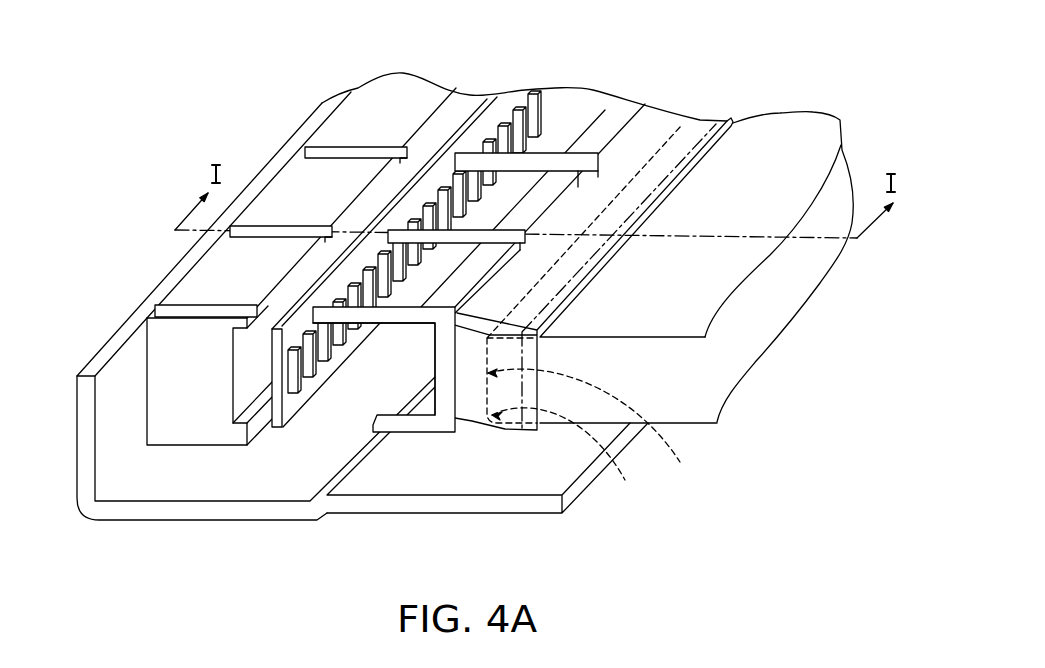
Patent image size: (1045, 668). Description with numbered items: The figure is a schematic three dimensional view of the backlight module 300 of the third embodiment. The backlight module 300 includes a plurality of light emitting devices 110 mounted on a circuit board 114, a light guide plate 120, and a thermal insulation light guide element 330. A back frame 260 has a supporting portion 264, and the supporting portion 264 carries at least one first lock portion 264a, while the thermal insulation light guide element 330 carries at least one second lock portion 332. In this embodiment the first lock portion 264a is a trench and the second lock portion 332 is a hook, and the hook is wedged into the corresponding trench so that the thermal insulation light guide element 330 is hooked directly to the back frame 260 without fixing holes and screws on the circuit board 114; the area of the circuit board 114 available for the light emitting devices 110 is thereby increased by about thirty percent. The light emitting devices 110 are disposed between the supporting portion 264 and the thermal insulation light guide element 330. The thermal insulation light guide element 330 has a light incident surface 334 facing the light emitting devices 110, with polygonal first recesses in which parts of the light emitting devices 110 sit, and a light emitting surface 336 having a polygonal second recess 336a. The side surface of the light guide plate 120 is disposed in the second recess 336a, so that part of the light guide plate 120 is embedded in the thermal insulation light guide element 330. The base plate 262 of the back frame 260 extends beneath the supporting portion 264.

The light emitting device 110 is at (293, 395).
The circuit board 114 is at (486, 124).
The light guide plate 120 is at (783, 122).
The back frame 260 is at (266, 358).
The base plate 262 is at (217, 514).
The supporting portion 264 is at (113, 455).
The first lock portion 264a is at (226, 312).
The backlight module 300 is at (796, 528).
The thermal insulation light guide element 330 is at (473, 412).
The second lock portion 332 is at (553, 152).
The light incident surface 334 is at (433, 352).
The light emitting surface 336 is at (595, 428).
The second recess 336a is at (584, 319).